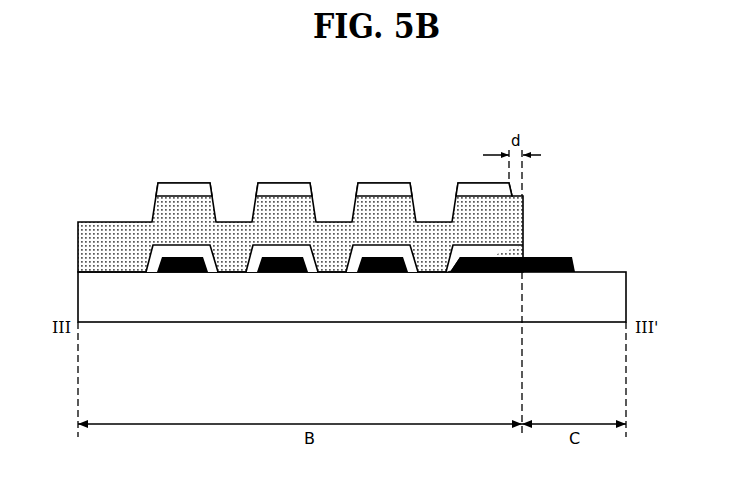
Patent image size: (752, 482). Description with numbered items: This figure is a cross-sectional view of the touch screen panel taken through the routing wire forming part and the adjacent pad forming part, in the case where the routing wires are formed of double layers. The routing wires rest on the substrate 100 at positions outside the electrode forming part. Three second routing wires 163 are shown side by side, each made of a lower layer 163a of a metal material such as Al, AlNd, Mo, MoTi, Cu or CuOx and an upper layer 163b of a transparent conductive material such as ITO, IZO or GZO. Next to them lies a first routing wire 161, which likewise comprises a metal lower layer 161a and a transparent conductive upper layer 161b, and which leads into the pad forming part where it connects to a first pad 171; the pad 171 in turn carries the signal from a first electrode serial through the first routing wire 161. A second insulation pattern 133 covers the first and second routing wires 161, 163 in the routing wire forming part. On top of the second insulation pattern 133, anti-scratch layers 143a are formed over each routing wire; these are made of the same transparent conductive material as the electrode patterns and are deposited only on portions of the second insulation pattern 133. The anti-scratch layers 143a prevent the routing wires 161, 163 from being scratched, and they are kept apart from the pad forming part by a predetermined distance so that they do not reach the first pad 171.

The substrate 100 is at (615, 296).
The second insulation pattern 133 is at (510, 220).
The anti-scratch layer 143a is at (187, 190).
The first routing wire 161 is at (481, 327).
The lower layer 161a is at (467, 272).
The upper layer 161b is at (503, 252).
The second routing wire 163 is at (290, 327).
The lower layer 163a is at (165, 272).
The upper layer 163b is at (213, 263).
The first pad 171 is at (553, 272).